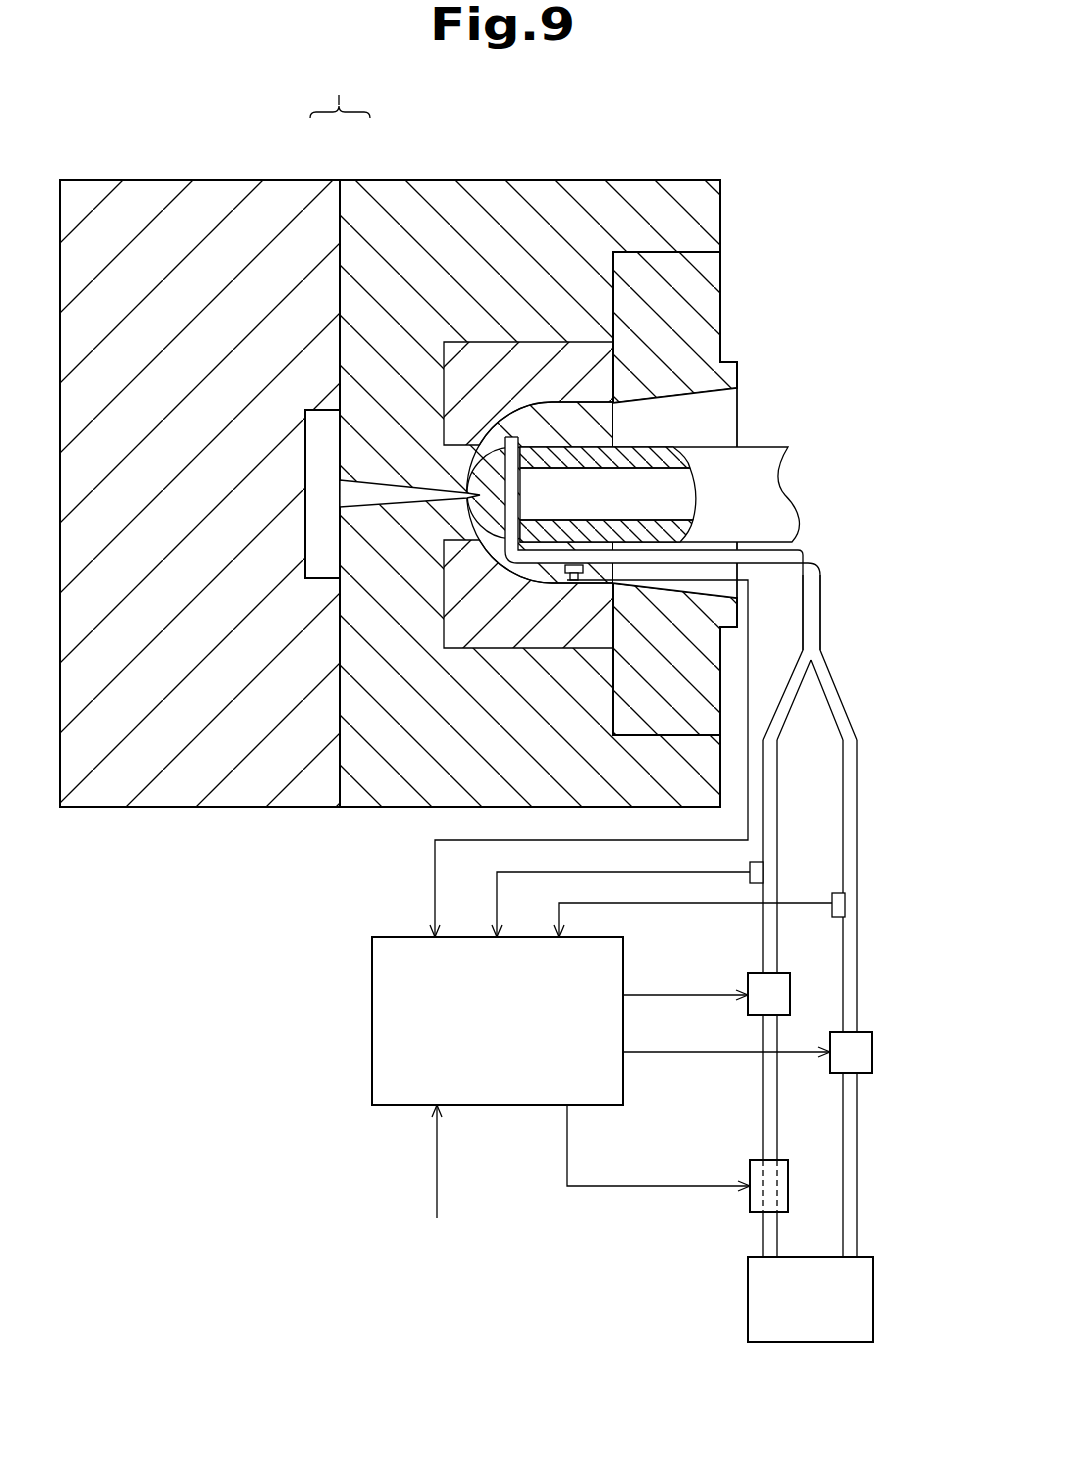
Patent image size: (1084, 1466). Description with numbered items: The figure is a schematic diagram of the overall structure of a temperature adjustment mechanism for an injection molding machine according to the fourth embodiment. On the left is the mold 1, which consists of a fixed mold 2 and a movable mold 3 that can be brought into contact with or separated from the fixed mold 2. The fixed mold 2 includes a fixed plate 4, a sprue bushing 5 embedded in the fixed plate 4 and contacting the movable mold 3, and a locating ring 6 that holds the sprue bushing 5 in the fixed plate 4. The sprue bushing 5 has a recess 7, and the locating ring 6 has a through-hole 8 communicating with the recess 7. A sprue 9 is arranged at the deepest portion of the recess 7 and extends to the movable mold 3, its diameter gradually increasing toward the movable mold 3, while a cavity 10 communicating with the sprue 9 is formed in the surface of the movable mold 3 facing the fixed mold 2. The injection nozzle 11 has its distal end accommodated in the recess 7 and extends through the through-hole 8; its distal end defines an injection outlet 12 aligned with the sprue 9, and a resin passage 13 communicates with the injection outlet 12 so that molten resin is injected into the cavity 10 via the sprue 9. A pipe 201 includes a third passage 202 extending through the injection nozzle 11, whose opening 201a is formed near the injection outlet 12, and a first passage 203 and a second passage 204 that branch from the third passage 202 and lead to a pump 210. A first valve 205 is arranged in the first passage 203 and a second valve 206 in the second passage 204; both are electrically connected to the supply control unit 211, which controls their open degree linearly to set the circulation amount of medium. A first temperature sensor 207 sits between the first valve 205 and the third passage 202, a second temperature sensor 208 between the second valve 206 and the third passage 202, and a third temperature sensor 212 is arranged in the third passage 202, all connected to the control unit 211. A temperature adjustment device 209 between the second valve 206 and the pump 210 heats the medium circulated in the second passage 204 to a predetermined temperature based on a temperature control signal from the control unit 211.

The mold 1 is at (340, 91).
The fixed mold 2 is at (380, 178).
The movable mold 3 is at (310, 178).
The fixed plate 4 is at (720, 212).
The sprue bushing 5 is at (480, 345).
The locating ring 6 is at (710, 315).
The recess 7 is at (590, 405).
The through-hole 8 is at (737, 388).
The sprue 9 is at (363, 487).
The cavity 10 is at (312, 450).
The injection nozzle 11 is at (768, 472).
The injection outlet 12 is at (480, 495).
The resin passage 13 is at (618, 468).
The pipe 201 is at (823, 560).
The opening 201a is at (518, 431).
The third passage 202 is at (813, 595).
The first passage 203 is at (850, 757).
The second passage 204 is at (768, 757).
The first valve 205 is at (858, 1048).
The second valve 206 is at (760, 973).
The first temperature sensor 207 is at (845, 902).
The second temperature sensor 208 is at (758, 873).
The temperature adjustment device 209 is at (755, 1170).
The pump 210 is at (758, 1288).
The supply control unit 211 is at (370, 960).
The third temperature sensor 212 is at (558, 572).